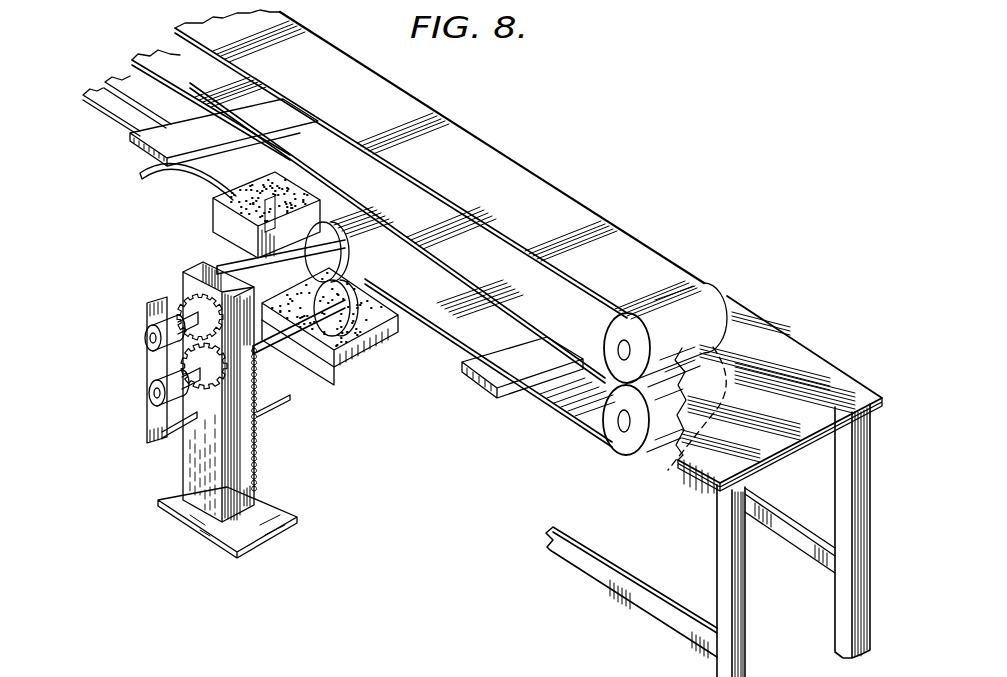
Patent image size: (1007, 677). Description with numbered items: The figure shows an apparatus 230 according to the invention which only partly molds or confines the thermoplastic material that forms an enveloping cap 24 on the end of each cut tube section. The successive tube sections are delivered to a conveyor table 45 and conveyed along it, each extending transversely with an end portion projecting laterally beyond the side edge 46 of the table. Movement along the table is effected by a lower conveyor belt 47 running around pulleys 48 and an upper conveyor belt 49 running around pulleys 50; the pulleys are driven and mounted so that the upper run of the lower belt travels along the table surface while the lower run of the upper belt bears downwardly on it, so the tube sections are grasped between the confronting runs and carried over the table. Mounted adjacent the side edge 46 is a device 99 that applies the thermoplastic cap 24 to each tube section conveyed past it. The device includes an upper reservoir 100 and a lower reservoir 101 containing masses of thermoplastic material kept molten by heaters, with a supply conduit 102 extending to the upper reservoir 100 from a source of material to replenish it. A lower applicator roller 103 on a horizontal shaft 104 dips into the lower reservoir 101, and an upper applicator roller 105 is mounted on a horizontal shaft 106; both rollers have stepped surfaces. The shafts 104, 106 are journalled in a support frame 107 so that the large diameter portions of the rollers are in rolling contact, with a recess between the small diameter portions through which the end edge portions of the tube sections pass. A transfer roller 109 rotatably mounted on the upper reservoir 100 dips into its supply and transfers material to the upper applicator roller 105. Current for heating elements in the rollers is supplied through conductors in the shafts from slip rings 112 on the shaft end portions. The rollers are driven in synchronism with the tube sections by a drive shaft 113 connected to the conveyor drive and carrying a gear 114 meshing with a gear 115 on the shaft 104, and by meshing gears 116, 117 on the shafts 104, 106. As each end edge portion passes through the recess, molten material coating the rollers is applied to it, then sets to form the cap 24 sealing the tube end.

The apparatus 230 is at (625, 128).
The enveloping cap 24 is at (135, 153).
The conveyor table 45 is at (780, 347).
The side edge 46 is at (687, 467).
The lower conveyor belt 47 is at (595, 422).
The pulleys 48 is at (630, 440).
The upper conveyor belt 49 is at (593, 227).
The pulleys 50 is at (618, 325).
The device 99 is at (170, 230).
The upper reservoir 100 is at (213, 216).
The lower reservoir 101 is at (390, 332).
The supply conduit 102 is at (143, 174).
The lower applicator roller 103 is at (322, 356).
The horizontal shaft 104 is at (254, 340).
The upper applicator roller 105 is at (380, 225).
The horizontal shaft 106 is at (262, 252).
The support frame 107 is at (185, 455).
The transfer roller 109 is at (362, 184).
The slip rings 112 is at (148, 350).
The drive shaft 113 is at (281, 404).
The gear 114 is at (259, 432).
The gear 115 is at (258, 396).
The gear 116 is at (200, 470).
The gear 117 is at (178, 296).